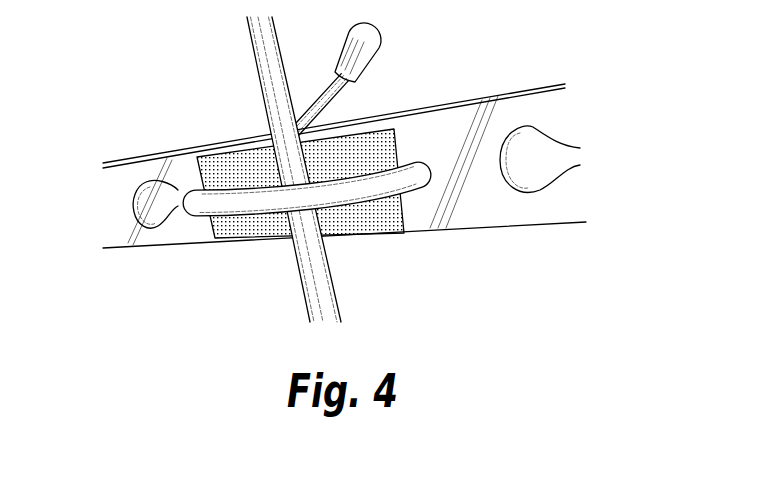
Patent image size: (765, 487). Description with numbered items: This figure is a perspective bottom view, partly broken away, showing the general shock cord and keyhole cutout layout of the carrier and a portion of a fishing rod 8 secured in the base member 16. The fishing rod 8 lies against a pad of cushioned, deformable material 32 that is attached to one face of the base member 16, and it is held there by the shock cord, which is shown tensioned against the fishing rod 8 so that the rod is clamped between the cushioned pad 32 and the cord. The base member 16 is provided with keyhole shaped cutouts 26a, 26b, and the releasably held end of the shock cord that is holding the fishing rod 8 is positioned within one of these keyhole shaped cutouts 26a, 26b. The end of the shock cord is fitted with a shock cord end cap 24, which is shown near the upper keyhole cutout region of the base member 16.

The fishing rod 8 is at (315, 268).
The base member 16 is at (462, 148).
The shock cord end cap 24 is at (370, 50).
The keyhole shaped cutout 26a is at (153, 210).
The keyhole shaped cutout 26b is at (525, 158).
The cushioned deformable material 32 is at (254, 172).